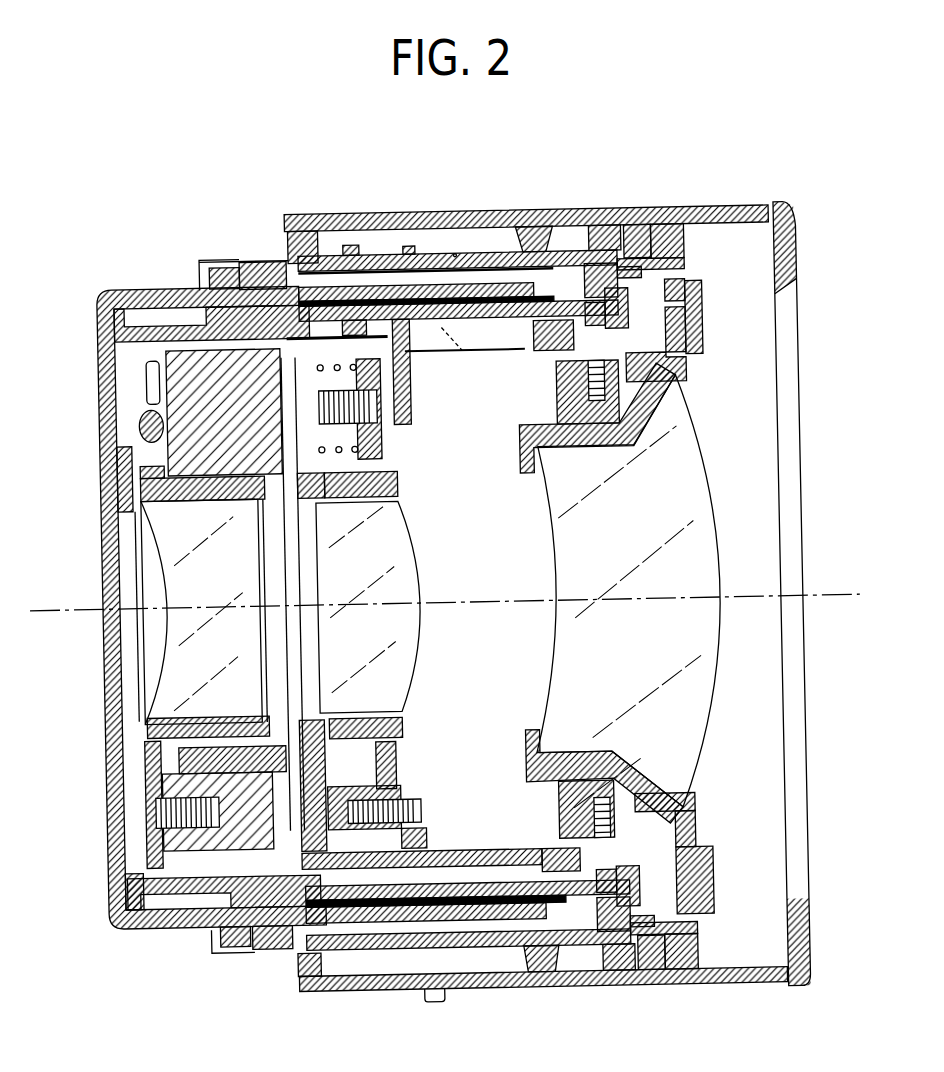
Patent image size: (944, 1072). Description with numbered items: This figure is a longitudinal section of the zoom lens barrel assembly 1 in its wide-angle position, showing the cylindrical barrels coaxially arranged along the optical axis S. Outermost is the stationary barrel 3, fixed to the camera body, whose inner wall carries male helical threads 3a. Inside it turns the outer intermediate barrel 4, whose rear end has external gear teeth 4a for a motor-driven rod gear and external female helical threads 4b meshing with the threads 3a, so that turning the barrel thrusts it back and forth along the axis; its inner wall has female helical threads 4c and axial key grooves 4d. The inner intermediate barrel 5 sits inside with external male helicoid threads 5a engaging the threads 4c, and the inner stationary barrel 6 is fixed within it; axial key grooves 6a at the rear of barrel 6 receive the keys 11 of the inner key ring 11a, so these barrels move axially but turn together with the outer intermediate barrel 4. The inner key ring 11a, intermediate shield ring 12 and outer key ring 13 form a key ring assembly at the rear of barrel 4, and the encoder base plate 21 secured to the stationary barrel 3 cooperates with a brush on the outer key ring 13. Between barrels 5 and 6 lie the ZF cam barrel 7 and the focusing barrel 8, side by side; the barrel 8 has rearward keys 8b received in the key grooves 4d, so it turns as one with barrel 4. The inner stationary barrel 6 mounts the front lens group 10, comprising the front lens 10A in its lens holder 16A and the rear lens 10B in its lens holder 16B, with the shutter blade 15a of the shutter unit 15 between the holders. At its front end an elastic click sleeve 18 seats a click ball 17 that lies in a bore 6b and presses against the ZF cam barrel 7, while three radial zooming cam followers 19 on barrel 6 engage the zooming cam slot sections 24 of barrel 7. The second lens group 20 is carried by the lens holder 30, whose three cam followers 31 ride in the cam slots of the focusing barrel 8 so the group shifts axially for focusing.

The zoom lens barrel assembly 1 is at (126, 262).
The stationary barrel 3 is at (725, 211).
The male helical threads 3a is at (540, 235).
The outer intermediate barrel 4 is at (416, 245).
The external gear teeth 4a is at (692, 246).
The external female helical threads 4b is at (679, 211).
The female helical threads 4c is at (462, 253).
The axial key grooves 4d is at (468, 351).
The inner intermediate barrel 5 is at (118, 283).
The external male helicoid threads 5a is at (492, 270).
The inner stationary barrel 6 is at (168, 302).
The axial key grooves 6a is at (470, 850).
The bore 6b is at (395, 284).
The ZF cam barrel 7 is at (425, 322).
The focusing barrel 8 is at (530, 330).
The keys 8b is at (693, 268).
The front lens group 10 is at (155, 570).
The front lens 10A is at (173, 675).
The rear lens 10B is at (405, 710).
The keys 11 is at (506, 850).
The inner key ring 11a is at (691, 375).
The intermediate shield ring 12 is at (691, 352).
The outer key ring 13 is at (708, 312).
The shutter unit 15 is at (118, 365).
The shutter blade 15a is at (300, 650).
The lens holder 16A is at (232, 608).
The lens holder 16B is at (408, 472).
The click ball 17 is at (358, 243).
The elastic click sleeve 18 is at (286, 404).
The radial zooming cam followers 19 is at (242, 262).
The second lens group 20 is at (720, 653).
The encoder base plate 21 is at (268, 258).
The zooming cam slot section 24 is at (312, 228).
The lens holder 30 is at (640, 780).
The cam followers 31 is at (606, 285).
The optical axis S is at (824, 602).